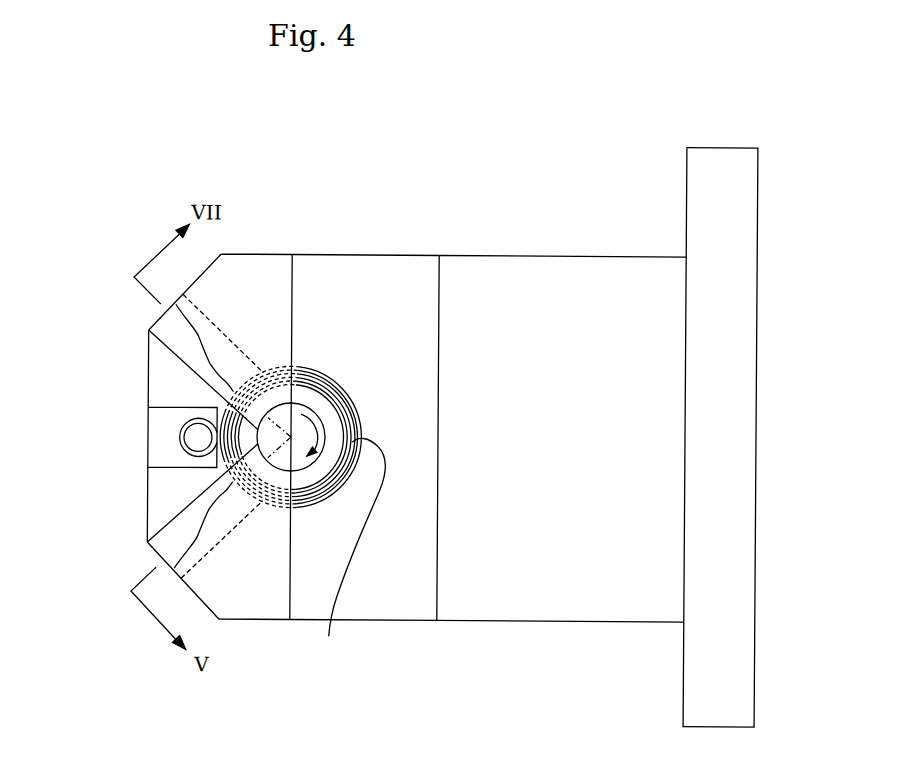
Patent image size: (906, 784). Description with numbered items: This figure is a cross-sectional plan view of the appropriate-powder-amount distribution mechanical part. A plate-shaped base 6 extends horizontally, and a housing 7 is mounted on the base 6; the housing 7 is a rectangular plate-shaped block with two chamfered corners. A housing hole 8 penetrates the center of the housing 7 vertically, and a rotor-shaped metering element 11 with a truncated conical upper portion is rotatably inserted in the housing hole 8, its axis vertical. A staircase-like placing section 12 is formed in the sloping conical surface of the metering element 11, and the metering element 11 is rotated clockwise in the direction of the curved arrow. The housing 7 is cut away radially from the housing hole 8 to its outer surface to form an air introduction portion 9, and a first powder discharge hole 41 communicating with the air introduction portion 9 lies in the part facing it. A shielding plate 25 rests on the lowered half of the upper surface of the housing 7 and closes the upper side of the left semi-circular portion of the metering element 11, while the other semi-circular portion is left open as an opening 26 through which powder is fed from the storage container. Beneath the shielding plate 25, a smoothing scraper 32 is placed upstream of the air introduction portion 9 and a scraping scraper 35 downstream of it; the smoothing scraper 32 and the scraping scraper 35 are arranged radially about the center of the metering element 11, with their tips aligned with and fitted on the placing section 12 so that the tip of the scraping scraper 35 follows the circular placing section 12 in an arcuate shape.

The base 6 is at (559, 606).
The housing 7 is at (415, 600).
The housing hole 8 is at (352, 556).
The air introduction portion 9 is at (157, 450).
The metering element 11 is at (359, 367).
The placing section 12 is at (352, 398).
The shielding plate 25 is at (263, 277).
The opening 26 is at (314, 381).
The smoothing scraper 32 is at (175, 533).
The scraping scraper 35 is at (170, 328).
The first powder discharge hole 41 is at (198, 438).